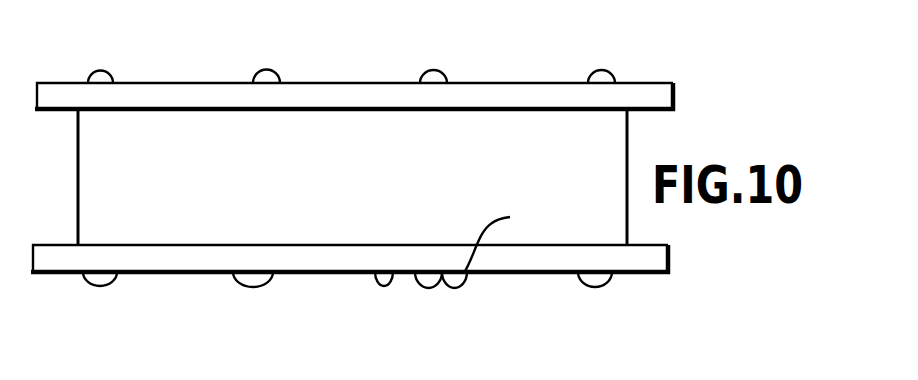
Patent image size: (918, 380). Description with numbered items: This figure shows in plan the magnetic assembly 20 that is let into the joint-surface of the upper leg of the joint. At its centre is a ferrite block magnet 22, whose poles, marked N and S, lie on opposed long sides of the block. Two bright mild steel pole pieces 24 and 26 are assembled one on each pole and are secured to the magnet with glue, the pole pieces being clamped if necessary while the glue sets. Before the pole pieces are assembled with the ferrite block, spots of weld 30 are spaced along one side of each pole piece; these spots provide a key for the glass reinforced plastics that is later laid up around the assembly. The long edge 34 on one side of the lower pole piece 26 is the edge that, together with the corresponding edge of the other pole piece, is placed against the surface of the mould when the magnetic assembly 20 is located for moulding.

The magnetic assembly 20 is at (72, 222).
The ferrite block magnet 22 is at (100, 165).
The pole piece 24 is at (332, 95).
The pole piece 26 is at (303, 258).
The spots of weld 30 is at (111, 73).
The long edge 34 is at (392, 273).